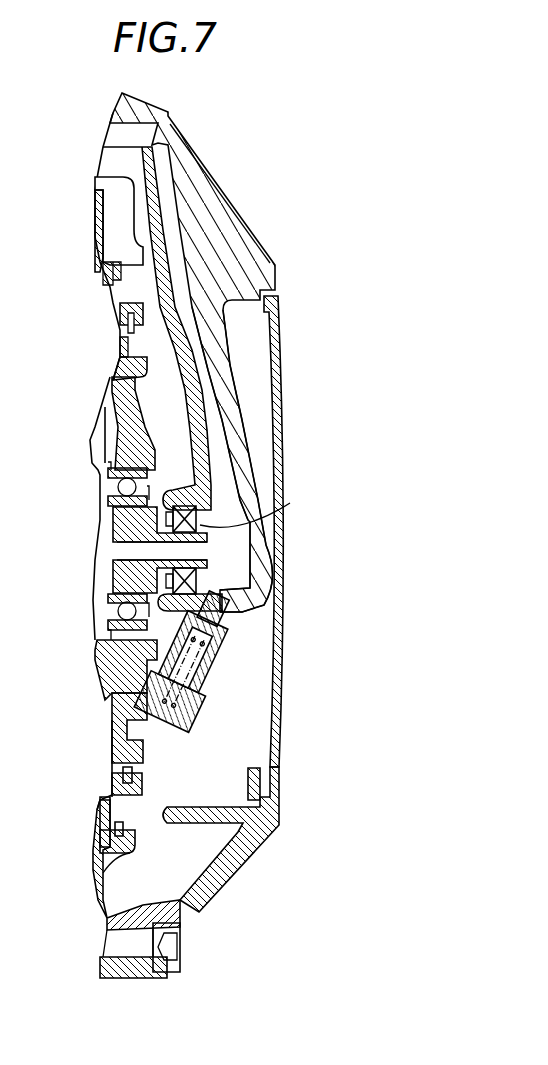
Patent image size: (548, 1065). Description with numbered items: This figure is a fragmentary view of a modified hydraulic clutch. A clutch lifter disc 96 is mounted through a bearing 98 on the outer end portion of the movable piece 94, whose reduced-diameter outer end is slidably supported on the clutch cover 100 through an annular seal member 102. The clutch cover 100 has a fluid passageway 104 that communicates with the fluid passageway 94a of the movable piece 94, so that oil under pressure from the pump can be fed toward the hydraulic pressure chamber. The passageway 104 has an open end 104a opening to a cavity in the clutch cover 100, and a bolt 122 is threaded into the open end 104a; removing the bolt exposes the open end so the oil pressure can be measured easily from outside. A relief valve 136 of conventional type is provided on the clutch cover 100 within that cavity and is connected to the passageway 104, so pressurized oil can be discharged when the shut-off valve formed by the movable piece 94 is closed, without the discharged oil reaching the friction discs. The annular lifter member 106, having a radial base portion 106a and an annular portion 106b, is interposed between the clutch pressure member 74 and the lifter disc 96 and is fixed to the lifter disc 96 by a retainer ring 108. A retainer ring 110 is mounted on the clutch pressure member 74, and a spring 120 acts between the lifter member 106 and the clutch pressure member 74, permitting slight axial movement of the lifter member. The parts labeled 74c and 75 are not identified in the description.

The clutch cover 100 is at (226, 207).
The cover lip 74c is at (103, 214).
The clutch pressure member 74 is at (114, 289).
The lifter member 106 is at (121, 312).
The annular portion 106b is at (118, 380).
The clutch lifter disc 96 is at (137, 422).
The bearing 98 is at (152, 483).
The movable piece 94 is at (118, 520).
The annular seal member 102 is at (262, 514).
The fluid passageway 94a is at (283, 528).
The fluid passageway 104 is at (213, 377).
The open end 104a is at (289, 568).
The bolt 122 is at (284, 418).
The spring 120 is at (287, 610).
The relief valve 136 is at (216, 684).
The flange 75 is at (124, 750).
The retainer ring 110 is at (133, 768).
The radial base portion 106a is at (105, 800).
The retainer ring 108 is at (131, 823).